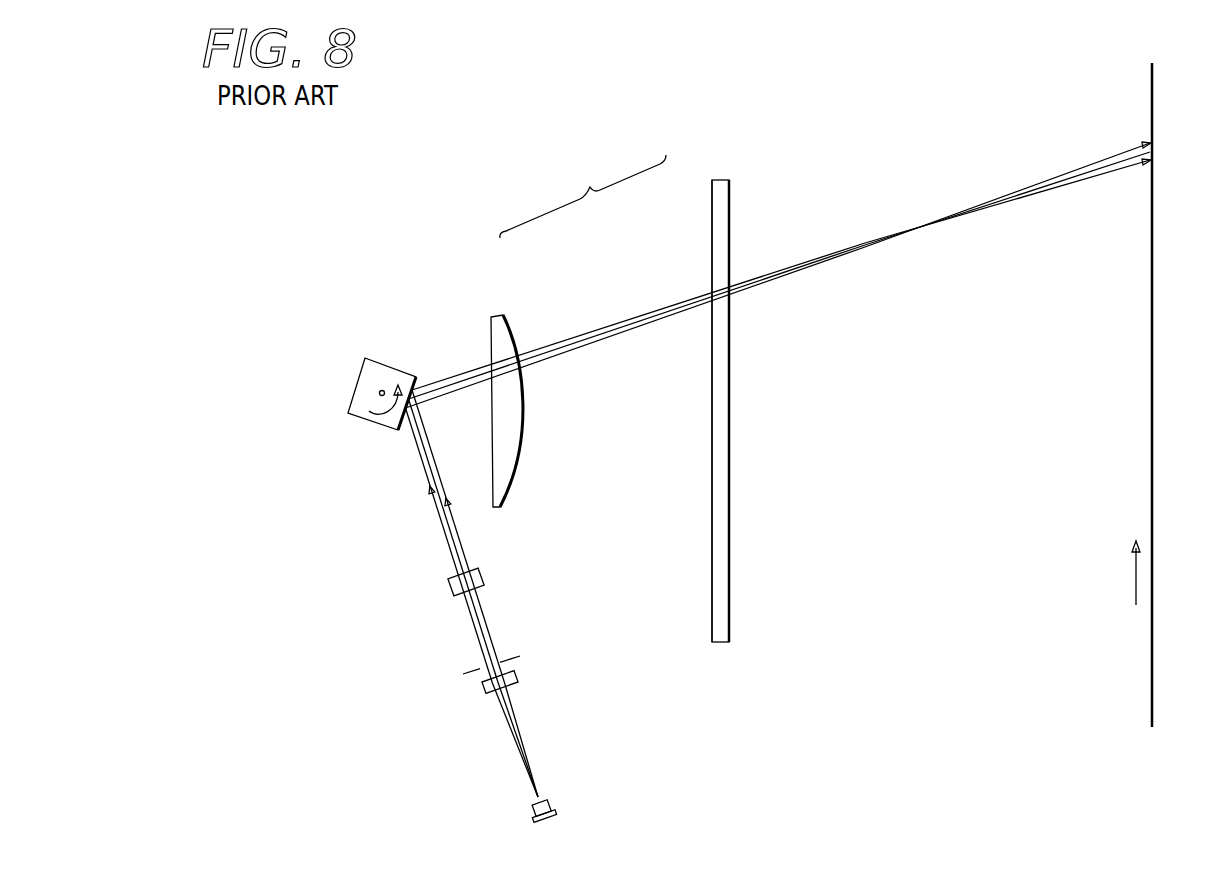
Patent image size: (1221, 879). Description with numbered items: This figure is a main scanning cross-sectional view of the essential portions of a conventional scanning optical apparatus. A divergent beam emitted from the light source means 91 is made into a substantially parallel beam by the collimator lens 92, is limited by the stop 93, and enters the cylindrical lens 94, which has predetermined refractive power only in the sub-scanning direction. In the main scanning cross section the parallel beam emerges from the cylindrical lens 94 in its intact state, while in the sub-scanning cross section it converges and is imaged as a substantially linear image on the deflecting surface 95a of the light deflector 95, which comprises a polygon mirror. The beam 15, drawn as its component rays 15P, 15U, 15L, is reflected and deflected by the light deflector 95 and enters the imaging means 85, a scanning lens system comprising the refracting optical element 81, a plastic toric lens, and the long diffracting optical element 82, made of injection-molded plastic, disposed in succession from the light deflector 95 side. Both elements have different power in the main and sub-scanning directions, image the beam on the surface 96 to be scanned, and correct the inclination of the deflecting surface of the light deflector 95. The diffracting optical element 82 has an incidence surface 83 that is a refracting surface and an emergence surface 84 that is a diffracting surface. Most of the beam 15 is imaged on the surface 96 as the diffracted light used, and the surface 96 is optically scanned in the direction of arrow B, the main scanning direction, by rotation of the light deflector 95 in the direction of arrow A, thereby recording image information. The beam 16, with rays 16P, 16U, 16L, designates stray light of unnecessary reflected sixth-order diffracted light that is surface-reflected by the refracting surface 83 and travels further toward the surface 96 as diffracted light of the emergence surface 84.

The beam 15 is at (636, 347).
The upper ray of beam 15U is at (597, 330).
The principal ray of beam 15P is at (617, 334).
The lower ray of beam 15L is at (670, 320).
The beam of reflected sixth-order diffracted light 16 is at (1008, 180).
The upper ray of stray light beam 16U is at (1108, 173).
The principal ray of stray light beam 16P is at (1061, 184).
The lower ray of stray light beam 16L is at (1104, 157).
The refracting optical element 81 is at (497, 316).
The diffracting optical element 82 is at (712, 198).
The incidence surface 83 is at (712, 573).
The emergence surface 84 is at (730, 558).
The imaging means 85 is at (583, 196).
The light source means 91 is at (536, 810).
The collimator lens 92 is at (484, 692).
The stop 93 is at (468, 668).
The cylindrical lens 94 is at (447, 589).
The light deflector 95 is at (380, 432).
The deflecting surface 95a is at (417, 376).
The surface to be scanned 96 is at (1153, 653).
The direction of rotation of light deflector A is at (358, 421).
The main scanning direction B is at (1128, 573).